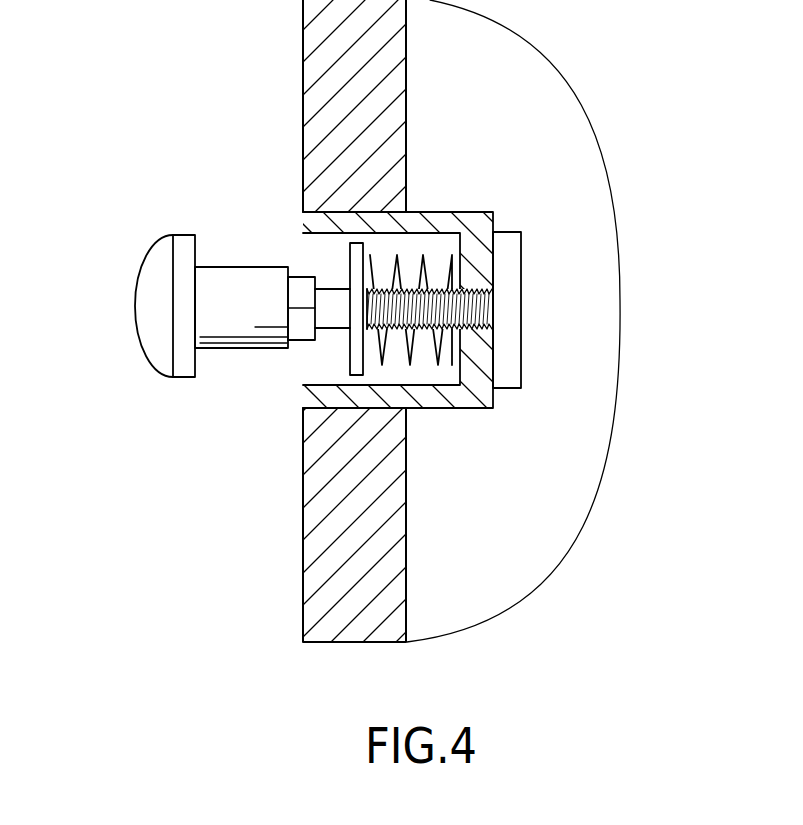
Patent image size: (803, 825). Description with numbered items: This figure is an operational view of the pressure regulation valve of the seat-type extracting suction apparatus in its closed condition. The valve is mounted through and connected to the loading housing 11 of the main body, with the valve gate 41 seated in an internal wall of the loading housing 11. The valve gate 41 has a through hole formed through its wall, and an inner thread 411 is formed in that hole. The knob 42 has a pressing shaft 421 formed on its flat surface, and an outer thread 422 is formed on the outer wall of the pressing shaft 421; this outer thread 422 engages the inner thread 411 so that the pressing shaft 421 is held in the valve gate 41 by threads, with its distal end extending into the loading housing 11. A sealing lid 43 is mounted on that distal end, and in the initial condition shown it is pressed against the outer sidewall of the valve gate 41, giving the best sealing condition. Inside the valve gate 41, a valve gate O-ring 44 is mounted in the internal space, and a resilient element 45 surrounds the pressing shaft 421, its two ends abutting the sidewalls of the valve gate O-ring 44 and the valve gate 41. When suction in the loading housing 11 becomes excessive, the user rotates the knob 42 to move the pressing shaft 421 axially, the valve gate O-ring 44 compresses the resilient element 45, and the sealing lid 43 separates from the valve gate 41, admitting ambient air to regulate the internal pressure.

The loading housing 11 is at (323, 87).
The valve gate 41 is at (423, 218).
The inner thread 411 is at (493, 303).
The knob 42 is at (162, 275).
The pressing shaft 421 is at (335, 297).
The outer thread 422 is at (387, 297).
The sealing lid 43 is at (510, 240).
The valve gate O-ring 44 is at (345, 358).
The resilient element 45 is at (410, 352).